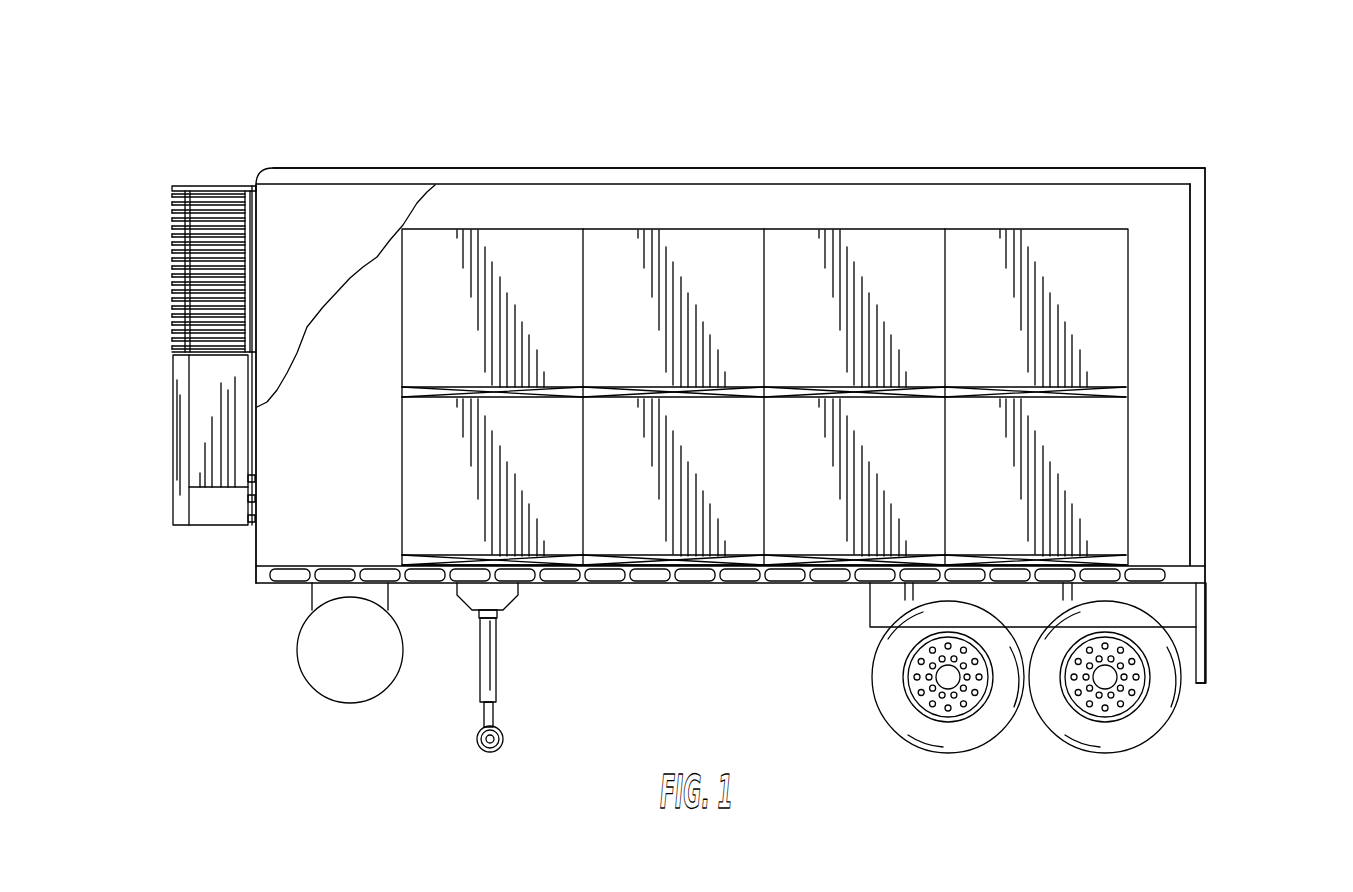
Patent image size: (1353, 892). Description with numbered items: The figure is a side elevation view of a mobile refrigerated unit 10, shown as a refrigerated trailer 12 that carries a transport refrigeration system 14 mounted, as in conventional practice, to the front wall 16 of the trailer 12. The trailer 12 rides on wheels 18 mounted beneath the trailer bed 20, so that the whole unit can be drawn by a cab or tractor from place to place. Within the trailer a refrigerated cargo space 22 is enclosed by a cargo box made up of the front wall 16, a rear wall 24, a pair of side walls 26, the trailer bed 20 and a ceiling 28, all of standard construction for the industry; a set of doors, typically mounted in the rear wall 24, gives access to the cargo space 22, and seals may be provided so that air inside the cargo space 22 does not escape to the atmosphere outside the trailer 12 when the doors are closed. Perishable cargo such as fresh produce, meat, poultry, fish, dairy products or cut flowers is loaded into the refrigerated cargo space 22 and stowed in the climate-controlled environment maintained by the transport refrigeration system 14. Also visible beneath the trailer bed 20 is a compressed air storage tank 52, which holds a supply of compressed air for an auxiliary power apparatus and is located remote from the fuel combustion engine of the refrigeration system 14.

The mobile refrigerated unit 10 is at (250, 105).
The refrigerated trailer 12 is at (898, 135).
The transport refrigeration system 14 is at (165, 402).
The front wall 16 is at (257, 438).
The wheels 18 is at (878, 703).
The trailer bed 20 is at (837, 583).
The refrigerated cargo space 22 is at (343, 408).
The rear wall 24 is at (1207, 383).
The side walls 26 is at (323, 307).
The ceiling 28 is at (647, 168).
The compressed air storage tank 52 is at (302, 680).